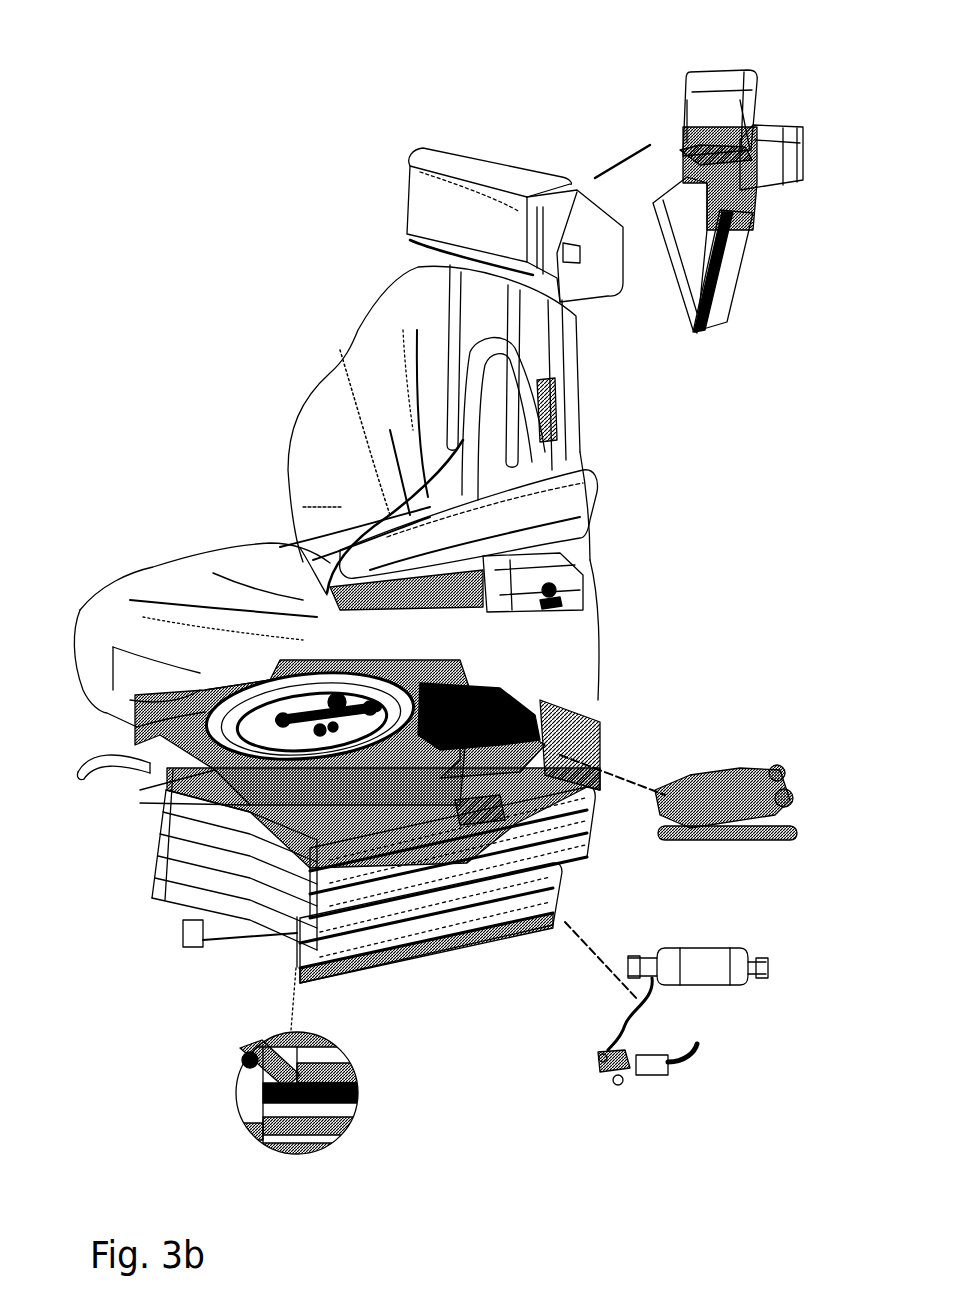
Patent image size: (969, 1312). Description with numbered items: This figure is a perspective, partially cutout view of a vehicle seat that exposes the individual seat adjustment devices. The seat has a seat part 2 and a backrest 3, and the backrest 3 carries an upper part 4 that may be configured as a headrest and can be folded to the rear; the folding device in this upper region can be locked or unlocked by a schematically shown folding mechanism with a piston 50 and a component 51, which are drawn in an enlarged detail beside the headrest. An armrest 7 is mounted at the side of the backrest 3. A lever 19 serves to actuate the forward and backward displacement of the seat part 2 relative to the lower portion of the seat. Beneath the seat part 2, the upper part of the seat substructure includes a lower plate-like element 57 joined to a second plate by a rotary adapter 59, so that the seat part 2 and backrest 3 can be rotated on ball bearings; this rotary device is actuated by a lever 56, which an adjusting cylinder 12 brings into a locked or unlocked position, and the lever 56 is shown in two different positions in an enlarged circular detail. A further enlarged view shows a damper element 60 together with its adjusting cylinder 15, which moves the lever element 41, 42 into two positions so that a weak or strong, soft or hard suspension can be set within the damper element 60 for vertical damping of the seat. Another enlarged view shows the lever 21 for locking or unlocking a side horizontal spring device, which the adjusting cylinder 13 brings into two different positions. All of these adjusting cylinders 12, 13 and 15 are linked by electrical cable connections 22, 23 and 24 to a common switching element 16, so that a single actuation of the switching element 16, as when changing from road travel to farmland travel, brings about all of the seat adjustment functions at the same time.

The seat part 2 is at (193, 560).
The backrest 3 is at (372, 367).
The upper part 4 is at (468, 155).
The armrest 7 is at (575, 518).
The adjusting cylinder 12 is at (337, 1067).
The adjusting cylinder 13 is at (718, 838).
The adjusting cylinder 15 is at (473, 830).
The switching element 16 is at (570, 673).
The lever 19 is at (97, 777).
The lever 21 is at (781, 770).
The electrical cable connection 22 is at (473, 423).
The electrical cable connection 23 is at (497, 650).
The electrical cable connection 24 is at (530, 727).
The lever element 41 is at (622, 1082).
The lever element 42 is at (604, 1066).
The piston 50 is at (755, 155).
The component 51 is at (685, 145).
The lever 56 is at (257, 1077).
The lower plate-like element 57 is at (172, 785).
The rotary adapter 59 is at (252, 787).
The damper element 60 is at (540, 742).